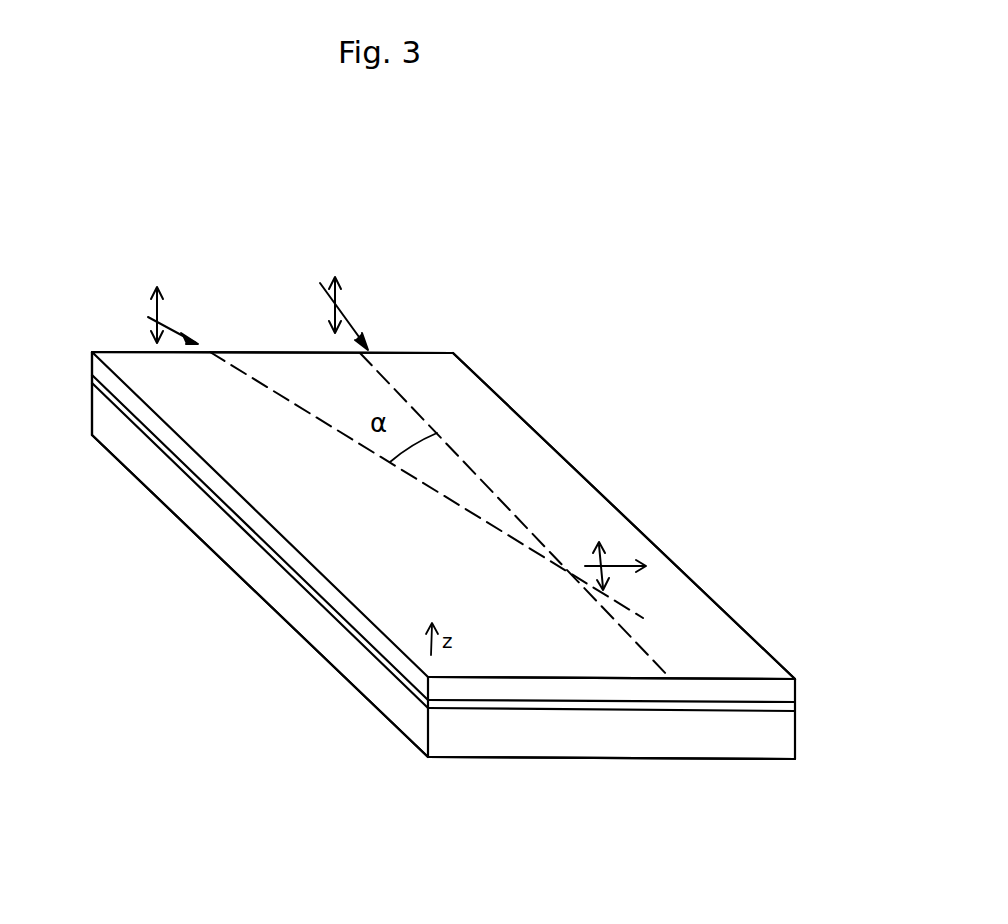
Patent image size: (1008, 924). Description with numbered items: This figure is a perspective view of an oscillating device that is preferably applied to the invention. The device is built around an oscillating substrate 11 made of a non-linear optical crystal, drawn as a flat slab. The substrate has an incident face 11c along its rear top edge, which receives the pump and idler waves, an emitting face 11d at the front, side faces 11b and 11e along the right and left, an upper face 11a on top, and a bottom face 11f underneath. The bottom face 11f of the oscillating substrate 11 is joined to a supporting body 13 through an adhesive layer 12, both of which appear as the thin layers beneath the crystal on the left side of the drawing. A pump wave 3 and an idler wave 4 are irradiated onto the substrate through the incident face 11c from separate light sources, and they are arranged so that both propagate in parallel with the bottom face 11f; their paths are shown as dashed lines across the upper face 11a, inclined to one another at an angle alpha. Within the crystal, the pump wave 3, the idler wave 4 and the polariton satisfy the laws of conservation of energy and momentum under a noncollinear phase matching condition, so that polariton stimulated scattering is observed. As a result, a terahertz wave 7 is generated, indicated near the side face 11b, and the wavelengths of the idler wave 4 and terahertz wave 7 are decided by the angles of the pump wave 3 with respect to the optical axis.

The pump wave 3 is at (340, 305).
The idler wave 4 is at (160, 325).
The terahertz wave 7 is at (622, 565).
The oscillating substrate 11 is at (532, 412).
The upper face 11a is at (458, 390).
The side face 11b is at (568, 457).
The incident face 11c is at (276, 350).
The emitting face 11d is at (778, 690).
The side face 11e is at (332, 597).
The bottom face 11f is at (362, 647).
The adhesive layer 12 is at (92, 378).
The supporting body 13 is at (122, 455).